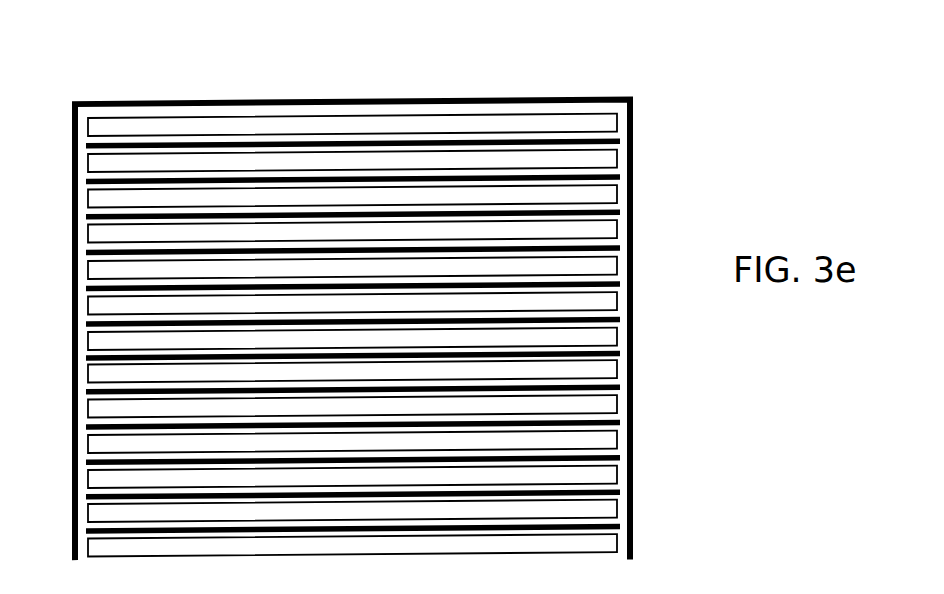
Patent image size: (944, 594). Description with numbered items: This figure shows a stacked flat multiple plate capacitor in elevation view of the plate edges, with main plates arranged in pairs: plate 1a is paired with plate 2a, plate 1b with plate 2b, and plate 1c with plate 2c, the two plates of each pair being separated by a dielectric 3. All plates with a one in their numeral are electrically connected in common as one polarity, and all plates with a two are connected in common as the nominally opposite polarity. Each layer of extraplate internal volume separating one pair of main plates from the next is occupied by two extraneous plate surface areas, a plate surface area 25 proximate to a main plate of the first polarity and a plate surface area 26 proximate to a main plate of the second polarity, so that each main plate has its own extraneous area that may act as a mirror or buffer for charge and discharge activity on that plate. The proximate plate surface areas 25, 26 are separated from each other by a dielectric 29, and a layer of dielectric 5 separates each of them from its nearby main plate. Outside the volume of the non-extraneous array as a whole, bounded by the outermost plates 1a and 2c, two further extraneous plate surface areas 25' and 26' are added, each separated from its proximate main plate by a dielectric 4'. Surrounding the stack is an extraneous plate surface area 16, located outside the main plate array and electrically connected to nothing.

The extraneous plate surface area 16 is at (89, 102).
The dielectric 4' is at (329, 336).
The dielectric 3 is at (97, 198).
The dielectric 5 is at (97, 234).
The dielectric 29 is at (97, 270).
The extraneous plate surface area 25' is at (389, 129).
The plate 1a is at (620, 177).
The plate 2a is at (620, 212).
The extraneous plate surface area 26 is at (387, 328).
The extraneous plate surface area 25 is at (387, 361).
The plate 1b is at (620, 320).
The plate 2b is at (620, 354).
The plate 1c is at (620, 458).
The plate 2c is at (620, 492).
The extraneous plate surface area 26' is at (389, 539).